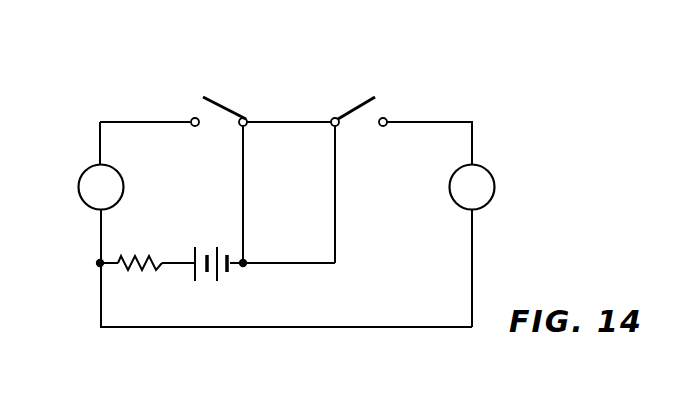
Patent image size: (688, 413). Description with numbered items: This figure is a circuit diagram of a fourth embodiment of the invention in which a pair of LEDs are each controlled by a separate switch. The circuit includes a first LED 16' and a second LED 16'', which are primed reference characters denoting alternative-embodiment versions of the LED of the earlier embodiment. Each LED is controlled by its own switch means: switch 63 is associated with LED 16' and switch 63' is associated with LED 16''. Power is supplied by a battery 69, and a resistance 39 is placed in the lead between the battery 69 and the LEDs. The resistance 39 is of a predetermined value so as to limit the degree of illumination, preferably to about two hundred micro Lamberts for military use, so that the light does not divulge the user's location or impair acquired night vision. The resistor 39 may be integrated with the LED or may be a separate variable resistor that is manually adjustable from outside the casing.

The switch 63 is at (228, 101).
The switch 63' is at (346, 101).
The LED 16' is at (127, 187).
The LED 16'' is at (498, 187).
The resistance 39 is at (147, 271).
The battery 69 is at (217, 277).